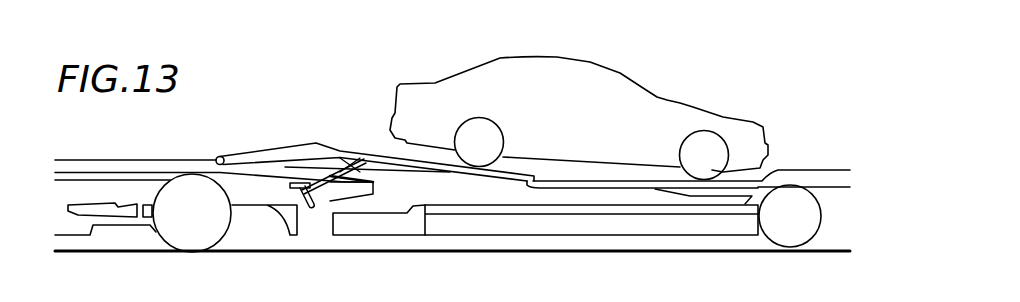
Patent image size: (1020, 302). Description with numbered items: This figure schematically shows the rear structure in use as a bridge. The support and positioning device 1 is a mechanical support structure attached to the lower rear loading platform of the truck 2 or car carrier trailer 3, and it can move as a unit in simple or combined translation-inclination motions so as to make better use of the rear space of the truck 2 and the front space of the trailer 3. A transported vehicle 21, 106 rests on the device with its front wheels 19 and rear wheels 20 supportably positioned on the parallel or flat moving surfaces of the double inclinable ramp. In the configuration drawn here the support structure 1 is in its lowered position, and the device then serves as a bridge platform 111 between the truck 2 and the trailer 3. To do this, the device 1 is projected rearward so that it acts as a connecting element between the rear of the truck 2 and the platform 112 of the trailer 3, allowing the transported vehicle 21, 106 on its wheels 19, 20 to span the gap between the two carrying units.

The support and positioning device 1 is at (533, 176).
The truck 2 is at (68, 223).
The car carrier trailer 3 is at (722, 223).
The front wheels 19 is at (707, 147).
The rear wheels 20 is at (475, 130).
The transported vehicle 21 is at (618, 88).
The transported vehicle 106 is at (579, 95).
The bridge platform 111 is at (450, 163).
The platform of a trailer 112 is at (613, 185).